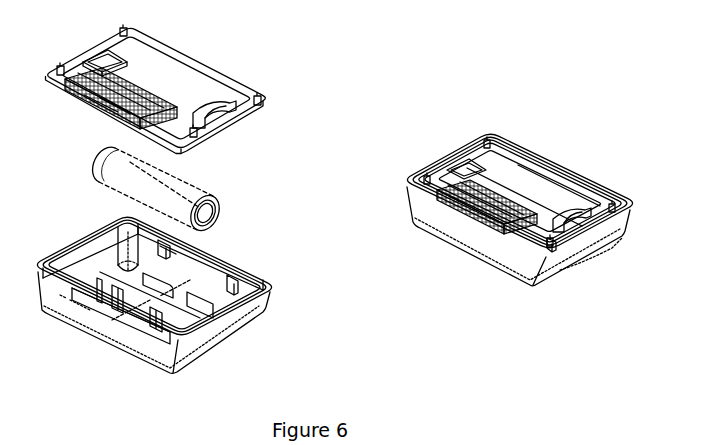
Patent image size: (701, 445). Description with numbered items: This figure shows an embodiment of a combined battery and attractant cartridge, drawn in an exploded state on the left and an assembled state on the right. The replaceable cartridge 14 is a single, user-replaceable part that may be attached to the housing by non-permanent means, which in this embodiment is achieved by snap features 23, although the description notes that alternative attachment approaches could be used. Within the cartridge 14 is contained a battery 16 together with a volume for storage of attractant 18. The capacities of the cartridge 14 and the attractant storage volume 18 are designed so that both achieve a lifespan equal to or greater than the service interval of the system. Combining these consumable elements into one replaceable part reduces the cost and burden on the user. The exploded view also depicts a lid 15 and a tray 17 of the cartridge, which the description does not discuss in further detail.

The replaceable cartridge 14 is at (525, 172).
The lid 15 is at (220, 72).
The battery 16 is at (220, 208).
The housing tray 17 is at (247, 270).
The volume for storage of attractant 18 is at (130, 308).
The snap features 23 is at (560, 238).